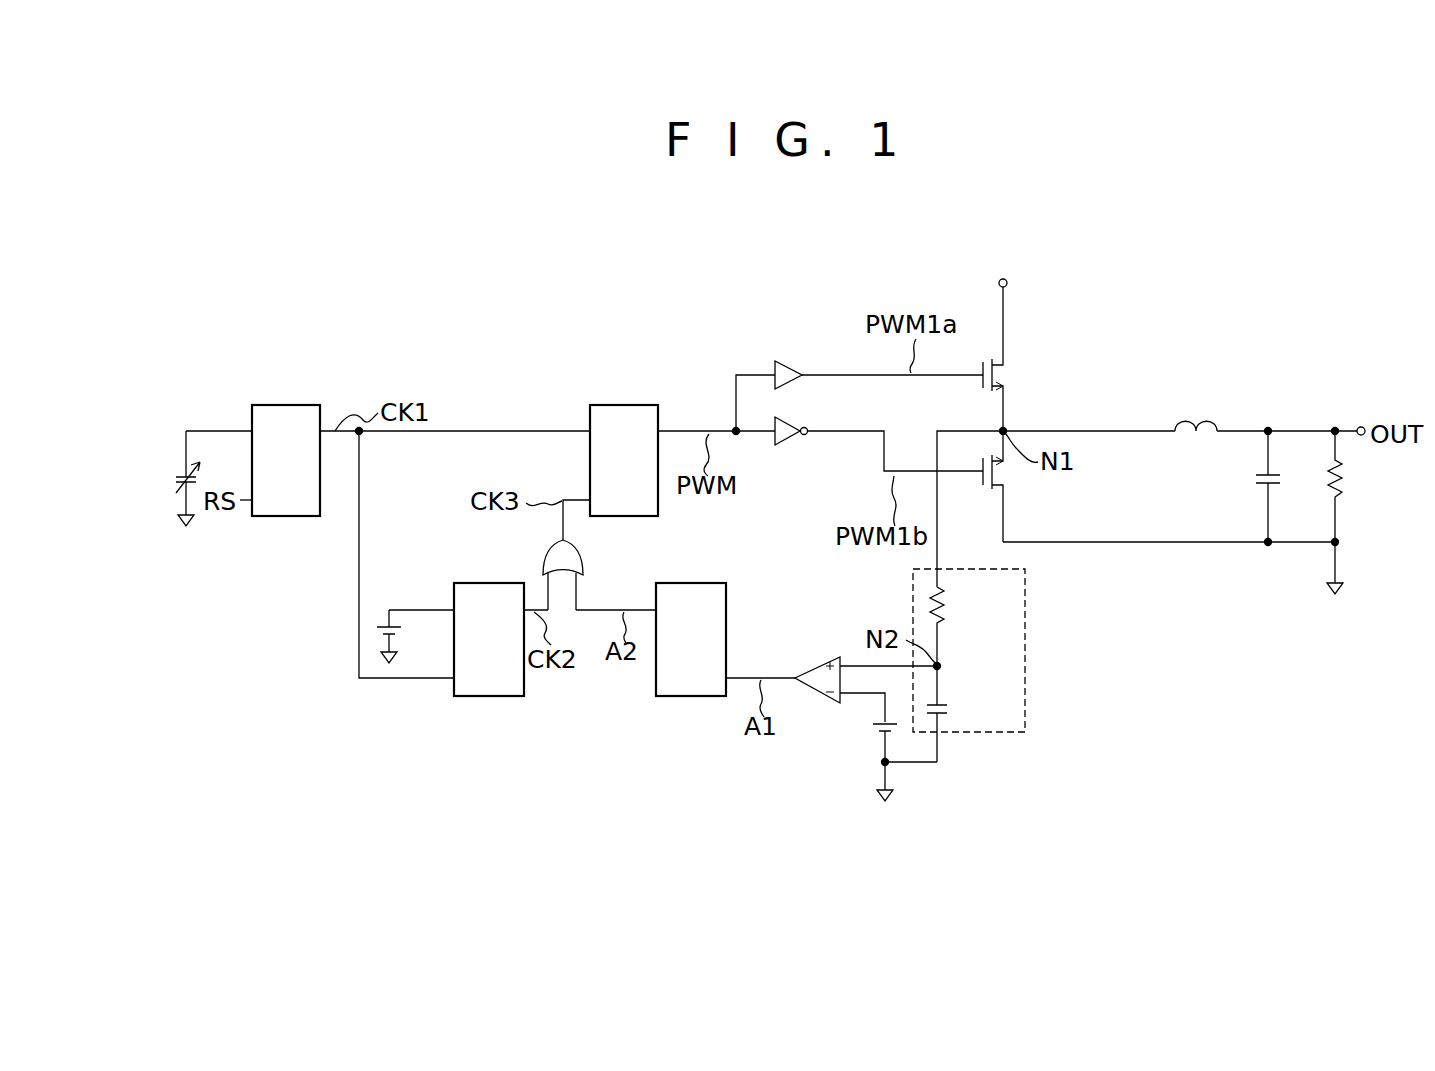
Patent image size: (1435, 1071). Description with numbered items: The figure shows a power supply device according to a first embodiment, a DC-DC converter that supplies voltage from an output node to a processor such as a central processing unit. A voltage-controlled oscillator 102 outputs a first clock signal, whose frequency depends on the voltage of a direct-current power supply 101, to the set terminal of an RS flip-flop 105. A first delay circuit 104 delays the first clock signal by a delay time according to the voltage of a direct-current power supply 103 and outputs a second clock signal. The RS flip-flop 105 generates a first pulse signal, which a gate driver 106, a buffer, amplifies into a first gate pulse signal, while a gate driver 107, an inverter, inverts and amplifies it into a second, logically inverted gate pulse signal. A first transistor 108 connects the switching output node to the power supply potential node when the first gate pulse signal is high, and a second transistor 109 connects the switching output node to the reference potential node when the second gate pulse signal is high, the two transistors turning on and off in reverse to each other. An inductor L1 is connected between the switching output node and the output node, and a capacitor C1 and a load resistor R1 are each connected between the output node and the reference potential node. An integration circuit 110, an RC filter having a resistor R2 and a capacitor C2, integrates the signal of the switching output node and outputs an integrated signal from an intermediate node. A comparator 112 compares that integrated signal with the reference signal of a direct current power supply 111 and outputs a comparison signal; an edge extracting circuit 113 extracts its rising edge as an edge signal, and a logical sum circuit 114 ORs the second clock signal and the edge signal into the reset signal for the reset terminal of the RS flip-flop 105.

The direct-current power supply 101 is at (182, 476).
The voltage-controlled oscillator 102 is at (287, 405).
The direct-current power supply 103 is at (386, 622).
The first delay circuit 104 is at (493, 583).
The RS flip-flop 105 is at (624, 405).
The gate driver 106 is at (795, 362).
The gate driver 107 is at (797, 437).
The first transistor 108 is at (1005, 368).
The second transistor 109 is at (1005, 488).
The integration circuit 110 is at (1014, 665).
The direct current power supply 111 is at (882, 733).
The comparator 112 is at (809, 660).
The edge extracting circuit 113 is at (697, 583).
The logical sum circuit 114 is at (581, 548).
The load resistor R1 is at (1340, 480).
The capacitor C1 is at (1271, 480).
The inductor L1 is at (1196, 437).
The resistor R2 is at (945, 602).
The capacitor C2 is at (950, 708).